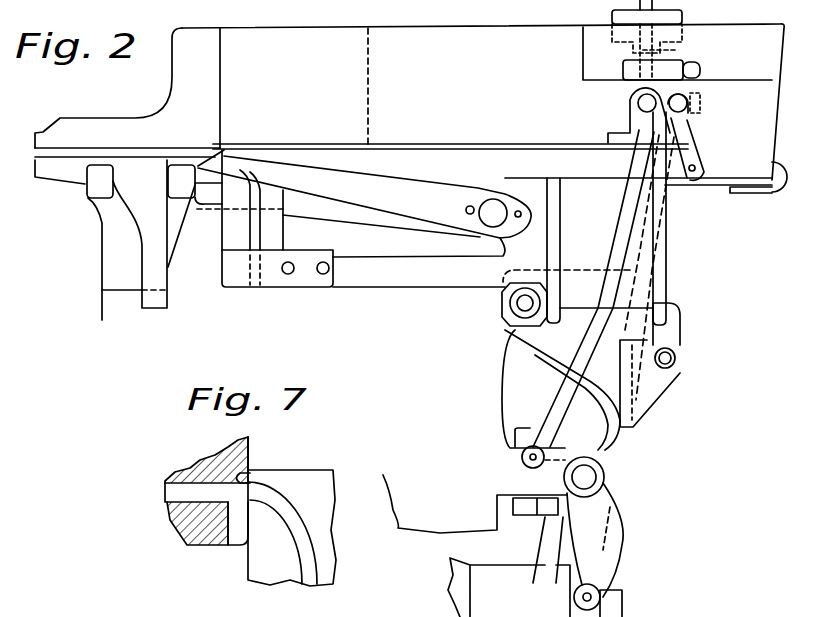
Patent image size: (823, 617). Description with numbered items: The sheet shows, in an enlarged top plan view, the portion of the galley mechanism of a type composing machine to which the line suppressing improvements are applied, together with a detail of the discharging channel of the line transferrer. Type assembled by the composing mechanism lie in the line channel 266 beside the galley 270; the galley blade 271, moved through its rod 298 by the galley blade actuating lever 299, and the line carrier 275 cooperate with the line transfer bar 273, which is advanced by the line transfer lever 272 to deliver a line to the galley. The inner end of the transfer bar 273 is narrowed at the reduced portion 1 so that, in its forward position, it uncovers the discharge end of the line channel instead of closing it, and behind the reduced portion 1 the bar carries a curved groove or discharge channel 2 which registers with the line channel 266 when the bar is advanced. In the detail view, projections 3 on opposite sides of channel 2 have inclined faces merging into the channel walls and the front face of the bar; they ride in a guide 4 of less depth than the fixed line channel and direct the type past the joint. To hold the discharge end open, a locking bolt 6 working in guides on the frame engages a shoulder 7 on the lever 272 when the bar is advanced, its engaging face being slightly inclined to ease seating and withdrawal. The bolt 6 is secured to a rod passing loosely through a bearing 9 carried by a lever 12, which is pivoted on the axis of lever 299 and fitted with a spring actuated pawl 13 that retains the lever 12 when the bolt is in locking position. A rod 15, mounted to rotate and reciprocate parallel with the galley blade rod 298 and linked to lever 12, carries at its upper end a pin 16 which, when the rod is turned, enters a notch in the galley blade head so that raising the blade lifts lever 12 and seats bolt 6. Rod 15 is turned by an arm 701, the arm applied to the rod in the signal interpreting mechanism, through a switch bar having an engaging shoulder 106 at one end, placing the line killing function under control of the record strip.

In FIG. 2, the reduced portion 1 is at (222, 148).
In FIG. 7, the reduced portion 1 is at (257, 475).
In FIG. 2, the discharge channel 2 is at (242, 230).
In FIG. 7, the discharge channel 2 is at (302, 513).
In FIG. 7, the projections 3 is at (240, 480).
In FIG. 7, the guide 4 is at (252, 465).
In FIG. 2, the locking bolt 6 is at (675, 355).
In FIG. 2, the shoulder 7 is at (672, 333).
In FIG. 2, the bearing 9 is at (643, 380).
In FIG. 2, the lever 12 is at (620, 467).
In FIG. 2, the spring actuated pawl 13 is at (648, 62).
In FIG. 2, the rod 15 is at (688, 106).
In FIG. 2, the pin 16 is at (676, 90).
In FIG. 2, the engaging shoulder 106 is at (773, 193).
In FIG. 2, the line channel 266 is at (107, 147).
In FIG. 7, the line channel 266 is at (173, 490).
In FIG. 2, the galley 270 is at (294, 88).
In FIG. 2, the galley blade 271 is at (565, 145).
In FIG. 2, the line transfer lever 272 is at (668, 277).
In FIG. 2, the line transfer bar 273 is at (385, 158).
In FIG. 7, the line transfer bar 273 is at (300, 511).
In FIG. 2, the line carrier 275 is at (456, 200).
In FIG. 2, the galley blade rod 298 is at (638, 103).
In FIG. 2, the galley blade actuating lever 299 is at (548, 530).
In FIG. 2, the link arm 701 is at (680, 128).